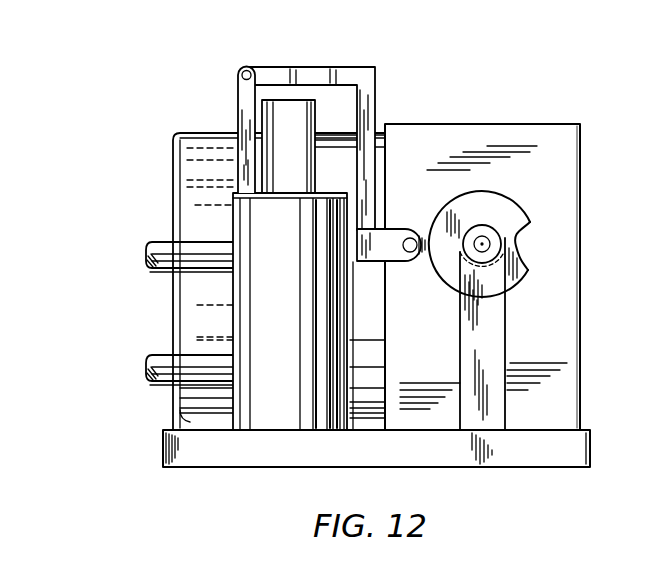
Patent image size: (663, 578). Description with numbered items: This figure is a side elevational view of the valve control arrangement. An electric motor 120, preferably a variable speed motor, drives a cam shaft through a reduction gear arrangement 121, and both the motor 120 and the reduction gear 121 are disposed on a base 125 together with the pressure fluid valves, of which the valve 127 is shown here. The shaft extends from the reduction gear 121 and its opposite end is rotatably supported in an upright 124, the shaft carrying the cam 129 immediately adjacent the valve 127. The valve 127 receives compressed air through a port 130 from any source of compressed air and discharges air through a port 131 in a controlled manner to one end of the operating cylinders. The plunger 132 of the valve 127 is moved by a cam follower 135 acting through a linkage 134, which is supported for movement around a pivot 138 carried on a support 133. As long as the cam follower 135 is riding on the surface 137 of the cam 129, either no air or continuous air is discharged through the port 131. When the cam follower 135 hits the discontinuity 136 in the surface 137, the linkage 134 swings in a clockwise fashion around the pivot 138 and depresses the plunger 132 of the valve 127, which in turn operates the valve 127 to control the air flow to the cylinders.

The electric motor 120 is at (185, 141).
The reduction gear arrangement 121 is at (487, 124).
The upright 124 is at (474, 230).
The base 125 is at (163, 467).
The valve 127 is at (288, 372).
The cam 129 is at (518, 286).
The port 130 is at (162, 362).
The port 131 is at (158, 252).
The plunger 132 is at (275, 122).
The support 133 is at (247, 98).
The linkage 134 is at (372, 66).
The cam follower 135 is at (423, 263).
The discontinuity 136 is at (533, 236).
The surface 137 is at (515, 184).
The pivot 138 is at (242, 66).